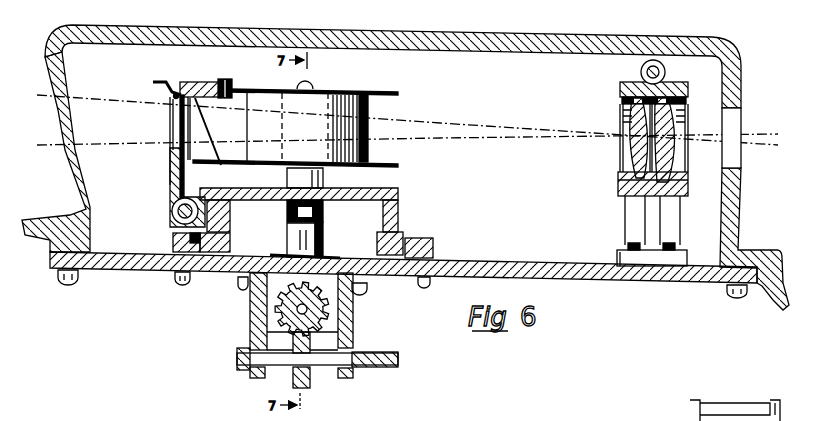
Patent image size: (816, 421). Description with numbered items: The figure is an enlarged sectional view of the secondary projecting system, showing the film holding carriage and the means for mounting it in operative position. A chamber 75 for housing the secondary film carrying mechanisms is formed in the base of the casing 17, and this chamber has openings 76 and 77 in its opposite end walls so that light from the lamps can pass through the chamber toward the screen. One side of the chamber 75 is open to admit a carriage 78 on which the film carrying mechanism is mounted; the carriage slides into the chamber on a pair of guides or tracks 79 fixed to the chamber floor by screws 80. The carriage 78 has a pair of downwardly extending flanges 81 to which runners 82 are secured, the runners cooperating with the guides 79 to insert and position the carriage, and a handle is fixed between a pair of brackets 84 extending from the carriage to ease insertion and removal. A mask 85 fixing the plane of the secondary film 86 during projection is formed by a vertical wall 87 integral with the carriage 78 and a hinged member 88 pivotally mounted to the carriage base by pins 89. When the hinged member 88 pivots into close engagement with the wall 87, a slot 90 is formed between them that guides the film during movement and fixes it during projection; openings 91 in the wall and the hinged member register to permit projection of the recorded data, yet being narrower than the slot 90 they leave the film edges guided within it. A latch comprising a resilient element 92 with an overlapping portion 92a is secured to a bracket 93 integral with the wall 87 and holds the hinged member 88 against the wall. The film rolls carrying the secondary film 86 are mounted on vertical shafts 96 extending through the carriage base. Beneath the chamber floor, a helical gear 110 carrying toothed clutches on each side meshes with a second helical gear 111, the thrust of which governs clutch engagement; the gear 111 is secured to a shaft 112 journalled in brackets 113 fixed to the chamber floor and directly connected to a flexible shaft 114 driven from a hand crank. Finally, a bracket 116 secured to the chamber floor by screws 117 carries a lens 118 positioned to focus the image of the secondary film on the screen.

The casing 17 is at (405, 162).
The chamber 75 is at (455, 57).
The opening 76 is at (68, 128).
The opening 77 is at (732, 123).
The carriage 78 is at (390, 191).
The guides or tracks 79 is at (173, 246).
The screws 80 is at (180, 283).
The flanges 81 is at (222, 218).
The runners 82 is at (232, 246).
The brackets 84 is at (722, 410).
The mask 85 is at (166, 113).
The secondary film 86 is at (370, 108).
The vertical wall 87 is at (200, 172).
The hinged member 88 is at (170, 183).
The pins 89 is at (173, 214).
The slot 90 is at (172, 96).
The openings 91 is at (178, 133).
The resilient element 92 is at (186, 83).
The overlapping portion 92a is at (172, 88).
The bracket 93 is at (222, 80).
The vertical shafts 96 is at (318, 82).
The helical gear 110 is at (330, 314).
The second helical gear 111 is at (313, 378).
The shaft 112 is at (250, 378).
The brackets 113 is at (255, 328).
The flexible shaft 114 is at (390, 367).
The bracket 116 is at (630, 215).
The screws 117 is at (620, 262).
The lens 118 is at (648, 152).